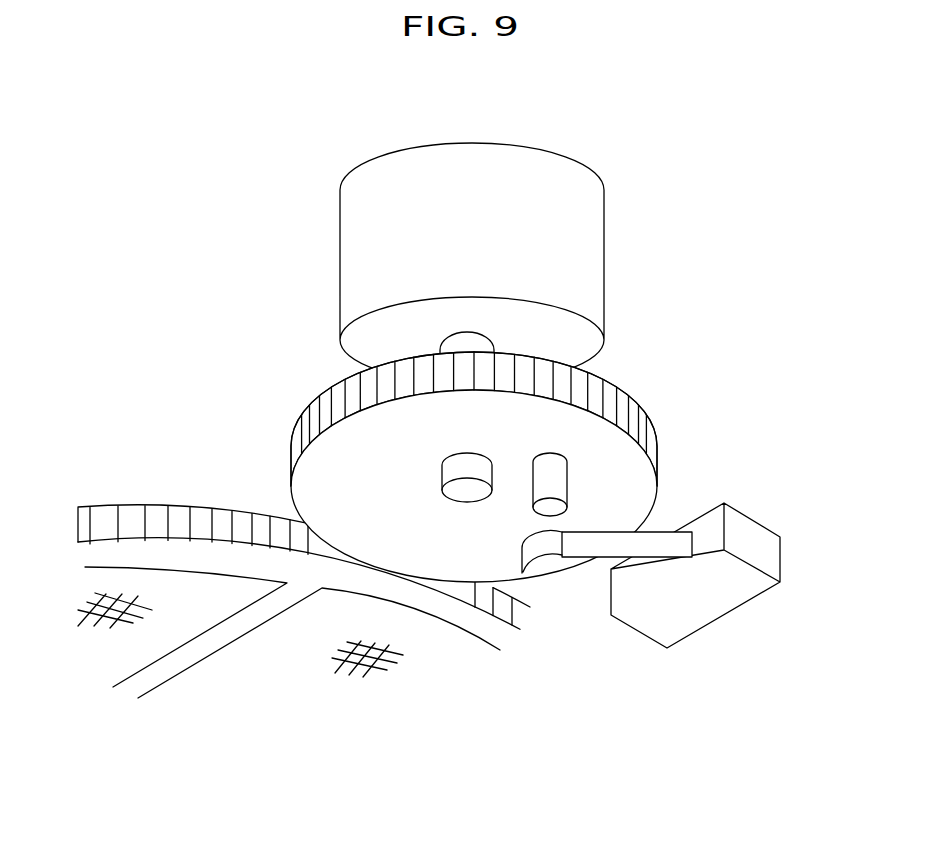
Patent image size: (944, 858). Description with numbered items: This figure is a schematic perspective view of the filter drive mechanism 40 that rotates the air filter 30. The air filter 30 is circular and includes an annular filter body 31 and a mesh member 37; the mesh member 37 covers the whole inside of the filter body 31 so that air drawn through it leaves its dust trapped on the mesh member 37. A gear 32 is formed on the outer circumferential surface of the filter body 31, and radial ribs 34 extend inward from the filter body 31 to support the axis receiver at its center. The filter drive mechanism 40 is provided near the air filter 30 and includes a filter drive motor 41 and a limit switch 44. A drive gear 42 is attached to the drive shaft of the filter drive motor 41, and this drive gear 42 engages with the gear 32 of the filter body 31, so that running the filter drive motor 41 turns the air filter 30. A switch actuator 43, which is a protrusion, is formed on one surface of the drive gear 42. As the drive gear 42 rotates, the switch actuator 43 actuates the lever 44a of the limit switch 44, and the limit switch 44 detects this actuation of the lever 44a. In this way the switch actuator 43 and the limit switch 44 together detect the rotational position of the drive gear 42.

The air filter 30 is at (287, 571).
The filter body 31 is at (105, 507).
The gear 32 is at (225, 525).
The radial ribs 34 is at (237, 625).
The mesh member 37 is at (80, 645).
The filter drive mechanism 40 is at (559, 375).
The filter drive motor 41 is at (413, 160).
The drive gear 42 is at (300, 412).
The switch actuator 43 is at (568, 484).
The limit switch 44 is at (780, 560).
The lever 44a is at (586, 545).